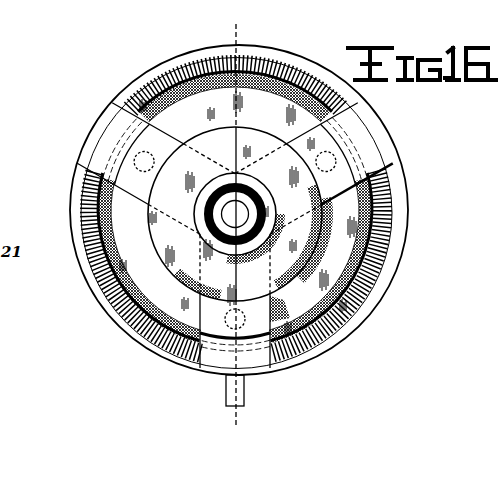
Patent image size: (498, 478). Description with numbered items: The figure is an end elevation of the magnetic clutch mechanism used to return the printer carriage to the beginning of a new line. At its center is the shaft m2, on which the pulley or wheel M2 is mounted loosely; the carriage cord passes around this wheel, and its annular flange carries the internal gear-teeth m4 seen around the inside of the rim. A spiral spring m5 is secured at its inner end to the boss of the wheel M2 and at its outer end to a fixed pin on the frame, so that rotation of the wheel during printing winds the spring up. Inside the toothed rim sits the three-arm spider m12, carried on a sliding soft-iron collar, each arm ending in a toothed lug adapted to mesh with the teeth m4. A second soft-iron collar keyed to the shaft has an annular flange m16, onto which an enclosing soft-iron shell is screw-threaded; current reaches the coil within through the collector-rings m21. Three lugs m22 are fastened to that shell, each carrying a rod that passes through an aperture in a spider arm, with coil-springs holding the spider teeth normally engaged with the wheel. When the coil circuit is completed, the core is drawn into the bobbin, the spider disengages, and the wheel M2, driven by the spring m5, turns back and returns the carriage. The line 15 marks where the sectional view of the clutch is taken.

The pulley or wheel M2 is at (172, 64).
The gear-teeth m4 is at (140, 92).
The three-arm spider m12 is at (420, 155).
The lugs m22 is at (393, 115).
The annular flange m16 is at (178, 260).
The shaft m2 is at (236, 216).
The collector-rings m21 is at (270, 205).
The section line 15 is at (239, 226).
The spiral spring m5 is at (347, 5).